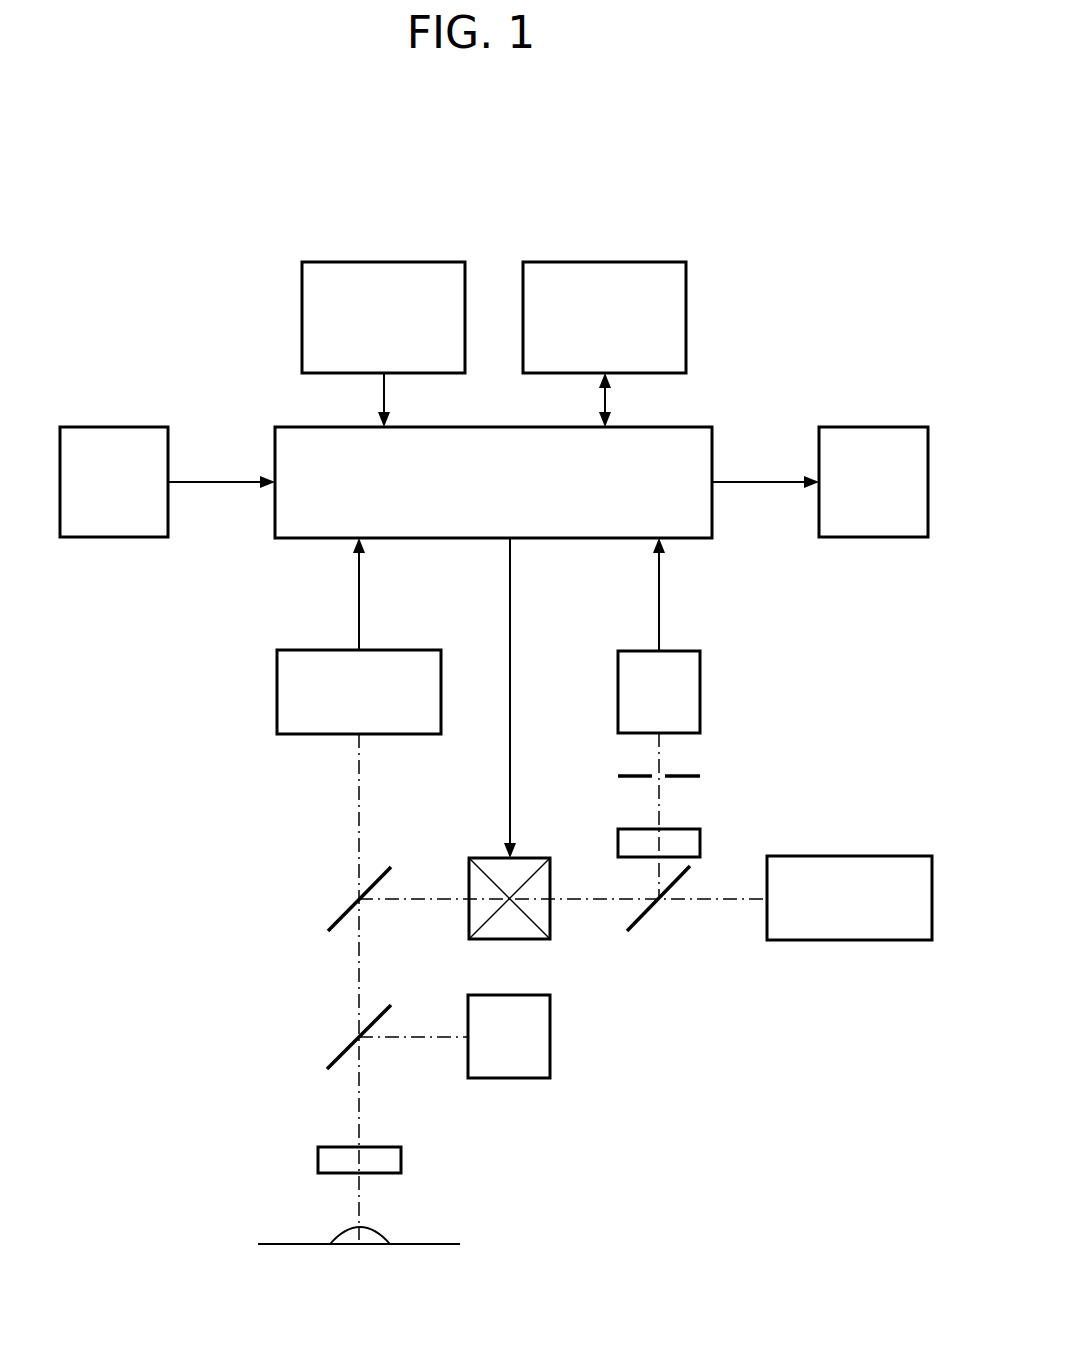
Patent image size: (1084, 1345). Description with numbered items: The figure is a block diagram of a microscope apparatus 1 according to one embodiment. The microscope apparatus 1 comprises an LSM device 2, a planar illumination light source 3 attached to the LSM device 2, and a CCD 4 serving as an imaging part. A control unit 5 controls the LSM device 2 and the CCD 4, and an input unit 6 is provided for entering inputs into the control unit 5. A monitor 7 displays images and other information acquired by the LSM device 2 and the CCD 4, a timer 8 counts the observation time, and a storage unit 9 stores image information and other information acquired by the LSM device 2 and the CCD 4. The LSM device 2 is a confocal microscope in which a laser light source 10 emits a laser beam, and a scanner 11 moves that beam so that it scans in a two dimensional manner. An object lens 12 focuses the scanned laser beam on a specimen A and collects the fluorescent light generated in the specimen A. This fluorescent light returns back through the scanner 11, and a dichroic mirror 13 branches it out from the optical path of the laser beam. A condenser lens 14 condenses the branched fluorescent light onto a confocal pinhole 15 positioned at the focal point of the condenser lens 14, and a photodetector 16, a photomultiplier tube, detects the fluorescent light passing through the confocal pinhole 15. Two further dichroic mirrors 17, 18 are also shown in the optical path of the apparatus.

The microscope apparatus 1 is at (756, 214).
The LSM device 2 is at (782, 741).
The planar illumination light source 3 is at (550, 1040).
The CCD 4 is at (277, 685).
The control unit 5 is at (714, 443).
The input unit 6 is at (385, 262).
The monitor 7 is at (876, 427).
The timer 8 is at (117, 427).
The storage unit 9 is at (612, 262).
The laser light source 10 is at (876, 856).
The scanner 11 is at (552, 922).
The object lens 12 is at (401, 1158).
The dichroic mirror 13 is at (642, 920).
The condenser lens 14 is at (702, 843).
The confocal pinhole 15 is at (632, 773).
The photodetector 16 is at (700, 670).
The dichroic mirror 17 is at (340, 1055).
The dichroic mirror 18 is at (345, 915).
The specimen A is at (335, 1239).